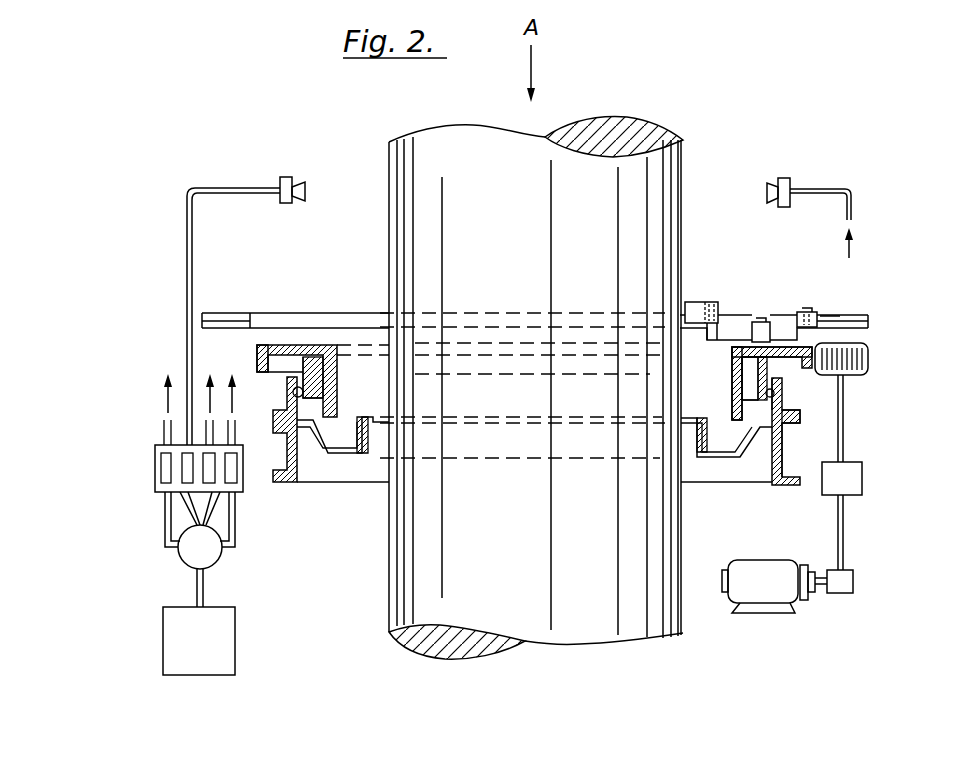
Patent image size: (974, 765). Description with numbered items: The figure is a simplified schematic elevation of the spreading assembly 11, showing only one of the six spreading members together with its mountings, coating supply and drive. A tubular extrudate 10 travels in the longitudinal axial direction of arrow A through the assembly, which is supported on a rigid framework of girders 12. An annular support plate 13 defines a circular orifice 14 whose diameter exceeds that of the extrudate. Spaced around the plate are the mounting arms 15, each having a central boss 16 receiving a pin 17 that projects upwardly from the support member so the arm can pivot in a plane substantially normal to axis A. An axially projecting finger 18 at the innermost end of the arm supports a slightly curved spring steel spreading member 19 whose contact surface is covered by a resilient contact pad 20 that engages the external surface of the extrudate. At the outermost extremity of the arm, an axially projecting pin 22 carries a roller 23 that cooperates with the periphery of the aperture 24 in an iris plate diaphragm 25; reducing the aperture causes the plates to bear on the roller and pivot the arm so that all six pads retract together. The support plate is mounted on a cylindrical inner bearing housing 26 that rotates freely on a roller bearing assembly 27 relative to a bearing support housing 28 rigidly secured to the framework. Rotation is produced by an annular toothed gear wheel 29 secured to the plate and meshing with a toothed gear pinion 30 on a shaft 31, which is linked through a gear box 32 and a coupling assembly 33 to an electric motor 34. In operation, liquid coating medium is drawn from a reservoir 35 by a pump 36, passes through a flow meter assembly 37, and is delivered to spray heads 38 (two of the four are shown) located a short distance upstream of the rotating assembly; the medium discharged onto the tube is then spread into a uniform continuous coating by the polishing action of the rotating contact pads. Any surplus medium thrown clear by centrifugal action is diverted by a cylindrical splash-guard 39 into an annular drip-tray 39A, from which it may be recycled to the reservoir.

The tubular extrudate 10 is at (690, 138).
The spreading assembly 11 is at (880, 305).
The framework of girders 12 is at (290, 483).
The annular support member or plate 13 is at (308, 345).
The circular orifice 14 is at (356, 345).
The mounting arm 15 is at (757, 322).
The central boss 16 is at (743, 348).
The pin 17 is at (807, 310).
The finger or pin 18 is at (716, 302).
The spreading member 19 is at (710, 300).
The resilient contact pad 20 is at (693, 300).
The axially projecting pin 22 is at (832, 316).
The roller 23 is at (813, 352).
The aperture 24 is at (249, 315).
The iris plate diaphragm 25 is at (222, 315).
The cylindrical inner bearing housing 26 is at (795, 392).
The roller bearing assembly 27 is at (793, 402).
The bearing support housing 28 is at (790, 412).
The toothed gear wheel 29 is at (257, 355).
The toothed gear pinion 30 is at (870, 360).
The shaft 31 is at (843, 520).
The gear box 32 is at (862, 480).
The coupling assembly 33 is at (853, 580).
The electric motor 34 is at (775, 565).
The reservoir 35 is at (218, 645).
The pump 36 is at (185, 555).
The flow meter assembly 37 is at (155, 462).
The spray head 38 is at (286, 181).
The cylindrical splash-guard 39 is at (732, 395).
The annular drip-tray 39A is at (722, 445).